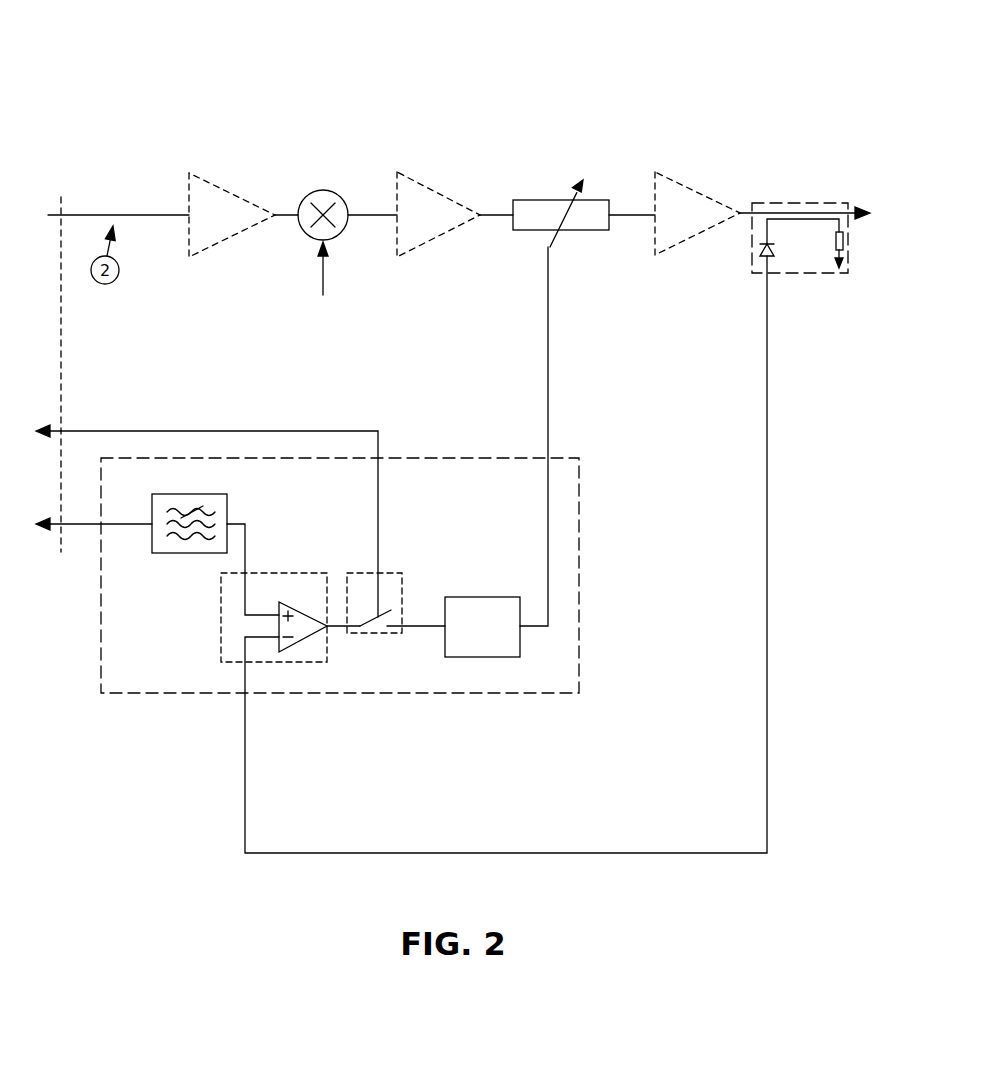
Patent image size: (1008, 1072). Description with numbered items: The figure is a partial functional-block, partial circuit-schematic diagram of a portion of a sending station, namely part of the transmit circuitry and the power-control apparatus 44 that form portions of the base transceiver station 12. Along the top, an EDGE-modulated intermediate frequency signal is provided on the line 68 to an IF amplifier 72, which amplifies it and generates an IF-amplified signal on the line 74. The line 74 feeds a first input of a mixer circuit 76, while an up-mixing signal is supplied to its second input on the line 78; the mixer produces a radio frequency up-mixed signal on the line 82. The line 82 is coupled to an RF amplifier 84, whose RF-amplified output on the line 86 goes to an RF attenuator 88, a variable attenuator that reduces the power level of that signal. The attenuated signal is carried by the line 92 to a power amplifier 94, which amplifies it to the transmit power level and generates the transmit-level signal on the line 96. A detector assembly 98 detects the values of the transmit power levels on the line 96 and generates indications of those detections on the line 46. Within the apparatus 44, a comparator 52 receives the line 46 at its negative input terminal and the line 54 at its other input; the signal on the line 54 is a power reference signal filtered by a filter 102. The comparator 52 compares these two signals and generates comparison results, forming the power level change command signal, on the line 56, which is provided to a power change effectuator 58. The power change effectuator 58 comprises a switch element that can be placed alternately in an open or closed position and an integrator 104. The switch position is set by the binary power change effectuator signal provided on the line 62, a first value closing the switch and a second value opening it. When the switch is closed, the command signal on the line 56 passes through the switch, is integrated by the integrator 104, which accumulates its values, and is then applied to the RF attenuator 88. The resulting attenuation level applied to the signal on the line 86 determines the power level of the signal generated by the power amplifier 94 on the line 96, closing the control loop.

The base transceiver station 12 is at (462, 107).
The apparatus 44 is at (578, 458).
The line 46 is at (533, 853).
The comparator 52 is at (300, 662).
The line 54 is at (245, 557).
The line 56 is at (340, 630).
The power change effectuator 58 is at (400, 573).
The line 62 is at (335, 431).
The line 68 is at (117, 216).
The IF amplifier 72 is at (210, 178).
The line 74 is at (290, 213).
The mixer circuit 76 is at (328, 192).
The line 78 is at (320, 267).
The line 82 is at (385, 216).
The RF amplifier 84 is at (415, 183).
The line 86 is at (493, 216).
The RF attenuator 88 is at (521, 200).
The line 92 is at (650, 213).
The power amplifier 94 is at (673, 180).
The line 96 is at (745, 213).
The detector assembly 98 is at (752, 246).
The filter 102 is at (200, 494).
The integrator 104 is at (475, 597).